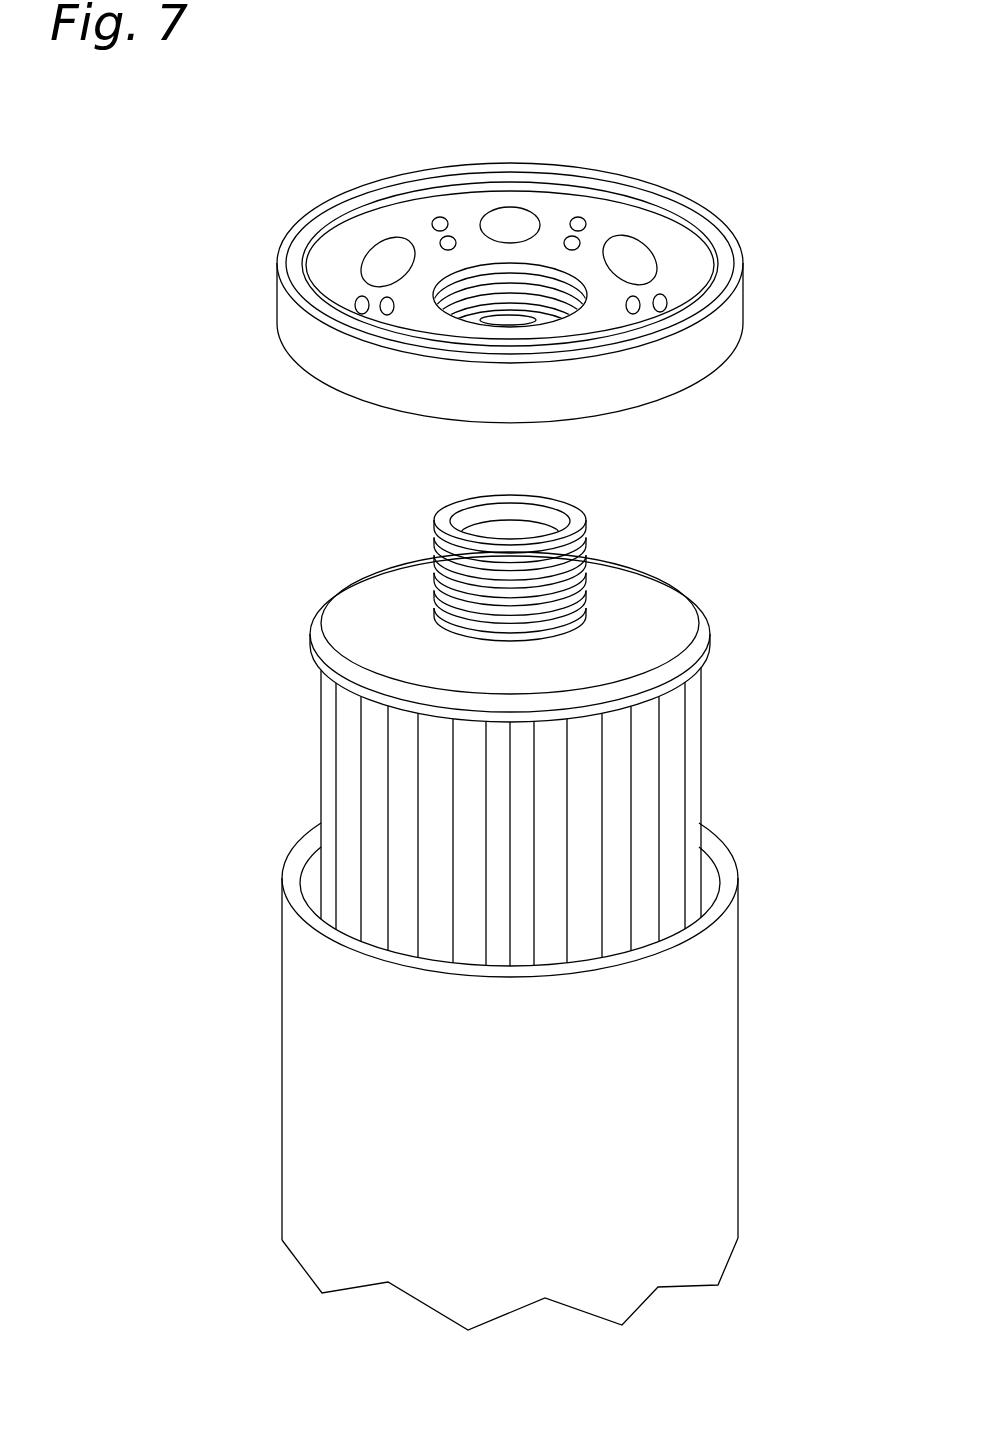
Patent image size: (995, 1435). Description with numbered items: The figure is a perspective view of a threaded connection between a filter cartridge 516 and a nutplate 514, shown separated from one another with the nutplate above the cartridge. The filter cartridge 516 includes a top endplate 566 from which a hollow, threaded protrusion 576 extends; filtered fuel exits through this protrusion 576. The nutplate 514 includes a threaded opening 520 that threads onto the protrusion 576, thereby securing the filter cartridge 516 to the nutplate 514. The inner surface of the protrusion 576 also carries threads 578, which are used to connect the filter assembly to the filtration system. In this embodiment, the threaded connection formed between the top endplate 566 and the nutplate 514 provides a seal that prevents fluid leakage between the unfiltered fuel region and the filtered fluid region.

The nutplate 514 is at (743, 258).
The threaded opening 520 is at (542, 288).
The filter cartridge 516 is at (322, 735).
The top endplate 566 is at (680, 607).
The threaded protrusion 576 is at (593, 565).
The threads 578 is at (473, 523).